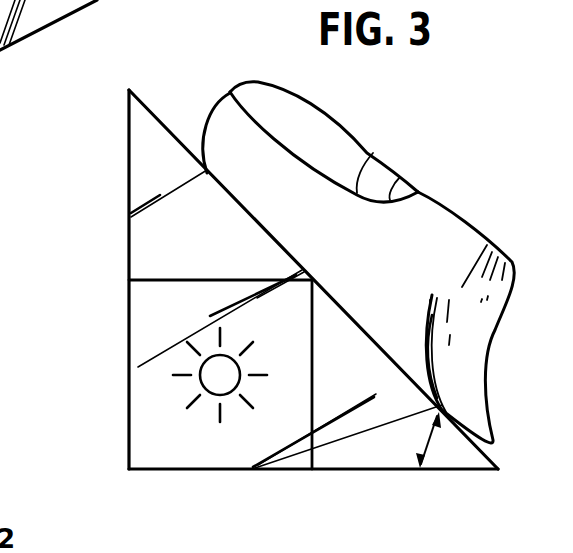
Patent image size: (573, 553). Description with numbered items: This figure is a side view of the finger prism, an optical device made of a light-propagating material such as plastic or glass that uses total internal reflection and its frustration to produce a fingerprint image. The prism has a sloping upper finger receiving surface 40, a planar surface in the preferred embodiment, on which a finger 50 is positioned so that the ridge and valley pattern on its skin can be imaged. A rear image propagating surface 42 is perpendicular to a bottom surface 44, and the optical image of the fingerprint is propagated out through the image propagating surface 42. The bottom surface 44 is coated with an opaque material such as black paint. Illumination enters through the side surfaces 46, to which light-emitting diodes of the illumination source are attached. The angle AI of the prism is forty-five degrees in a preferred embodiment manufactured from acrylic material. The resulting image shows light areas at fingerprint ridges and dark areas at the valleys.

The finger receiving surface 40 is at (160, 124).
The image propagating surface 42 is at (130, 315).
The bottom surface 44 is at (279, 470).
The side surfaces 46 is at (145, 163).
The finger 50 is at (442, 208).
The angle A1 AI is at (428, 437).